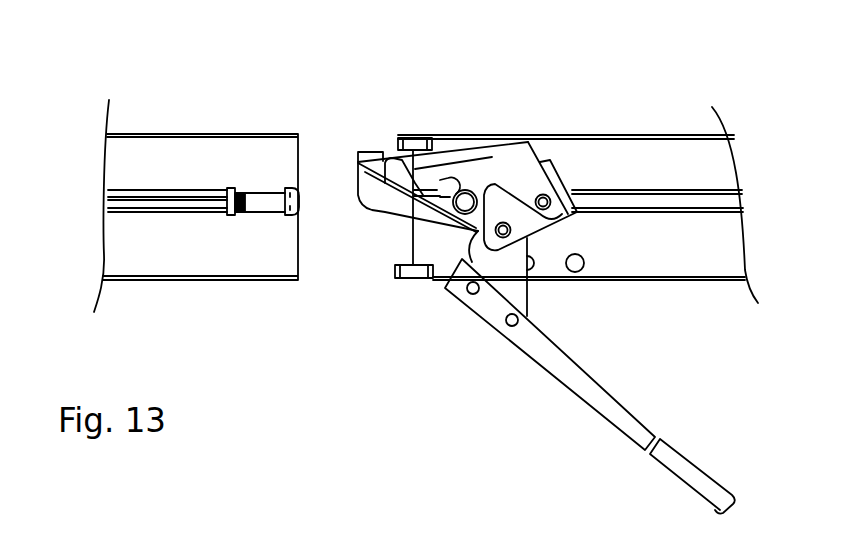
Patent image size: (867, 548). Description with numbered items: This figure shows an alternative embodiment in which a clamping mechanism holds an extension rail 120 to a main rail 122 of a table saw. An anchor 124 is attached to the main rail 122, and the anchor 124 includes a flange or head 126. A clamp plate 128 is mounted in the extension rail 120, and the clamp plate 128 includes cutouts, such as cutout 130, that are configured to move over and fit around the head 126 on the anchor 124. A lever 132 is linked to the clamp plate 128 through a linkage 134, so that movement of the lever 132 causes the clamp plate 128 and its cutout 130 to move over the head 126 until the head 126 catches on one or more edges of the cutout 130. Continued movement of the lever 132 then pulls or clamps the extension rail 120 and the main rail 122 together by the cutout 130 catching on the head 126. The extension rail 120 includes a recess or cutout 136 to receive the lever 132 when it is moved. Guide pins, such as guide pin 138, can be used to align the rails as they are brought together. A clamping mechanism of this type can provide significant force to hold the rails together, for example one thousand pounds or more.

The extension rail 120 is at (685, 152).
The main rail 122 is at (133, 155).
The anchor 124 is at (262, 198).
The head 126 is at (292, 214).
The clamp plate 128 is at (372, 150).
The cutout 130 is at (402, 172).
The lever 132 is at (540, 347).
The linkage 134 is at (550, 158).
The recess 136 is at (708, 282).
The guide pin 138 is at (403, 275).